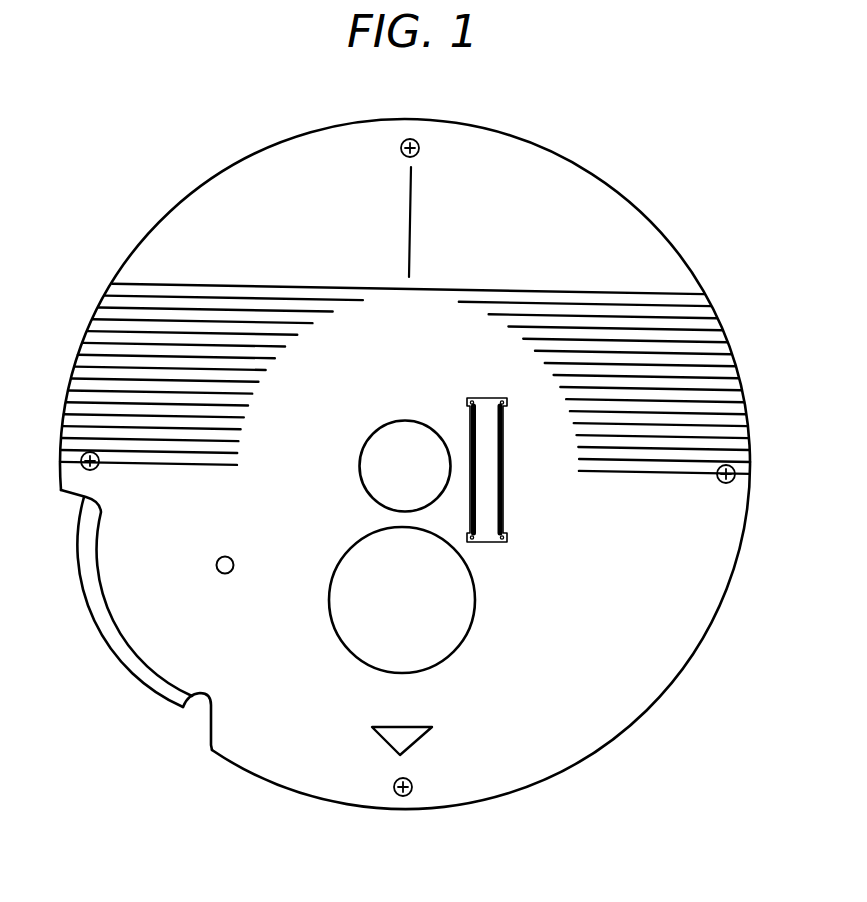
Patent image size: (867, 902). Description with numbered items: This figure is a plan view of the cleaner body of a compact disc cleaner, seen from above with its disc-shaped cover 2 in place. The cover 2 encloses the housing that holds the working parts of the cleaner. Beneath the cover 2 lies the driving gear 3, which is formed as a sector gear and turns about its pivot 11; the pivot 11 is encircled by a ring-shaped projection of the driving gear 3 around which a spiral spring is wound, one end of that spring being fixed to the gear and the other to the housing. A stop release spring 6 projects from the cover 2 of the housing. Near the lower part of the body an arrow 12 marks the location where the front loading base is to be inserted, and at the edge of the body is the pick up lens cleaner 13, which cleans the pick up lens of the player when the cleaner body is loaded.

The cover 2 is at (645, 250).
The driving gear 3 is at (128, 672).
The stop release spring 6 is at (502, 503).
The pivot 11 is at (380, 422).
The arrow 12 is at (424, 730).
The pick up lens cleaner 13 is at (184, 716).